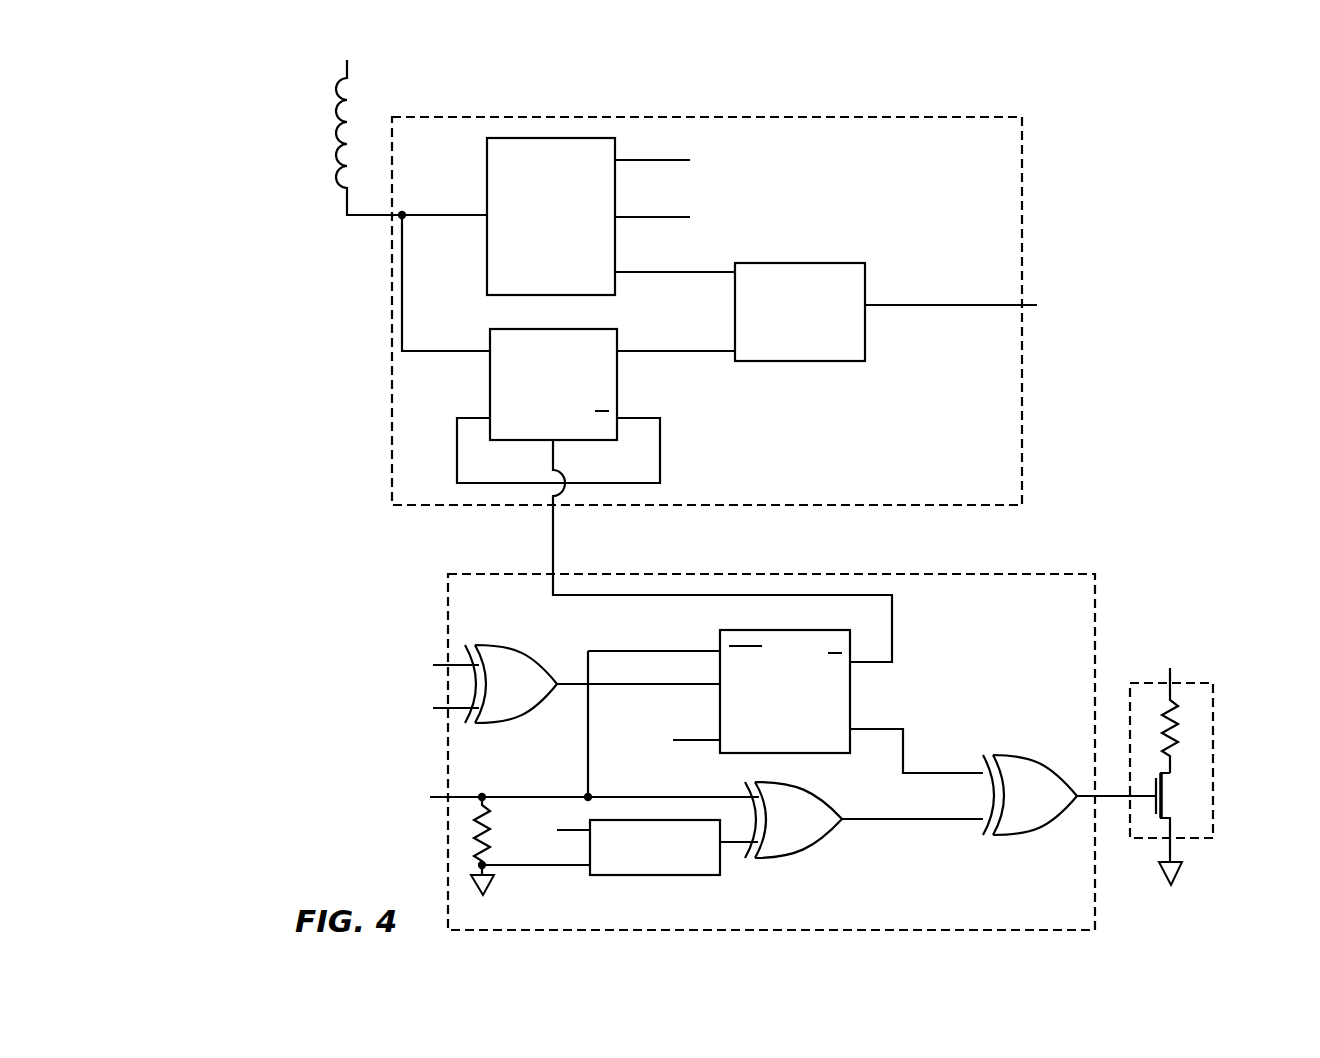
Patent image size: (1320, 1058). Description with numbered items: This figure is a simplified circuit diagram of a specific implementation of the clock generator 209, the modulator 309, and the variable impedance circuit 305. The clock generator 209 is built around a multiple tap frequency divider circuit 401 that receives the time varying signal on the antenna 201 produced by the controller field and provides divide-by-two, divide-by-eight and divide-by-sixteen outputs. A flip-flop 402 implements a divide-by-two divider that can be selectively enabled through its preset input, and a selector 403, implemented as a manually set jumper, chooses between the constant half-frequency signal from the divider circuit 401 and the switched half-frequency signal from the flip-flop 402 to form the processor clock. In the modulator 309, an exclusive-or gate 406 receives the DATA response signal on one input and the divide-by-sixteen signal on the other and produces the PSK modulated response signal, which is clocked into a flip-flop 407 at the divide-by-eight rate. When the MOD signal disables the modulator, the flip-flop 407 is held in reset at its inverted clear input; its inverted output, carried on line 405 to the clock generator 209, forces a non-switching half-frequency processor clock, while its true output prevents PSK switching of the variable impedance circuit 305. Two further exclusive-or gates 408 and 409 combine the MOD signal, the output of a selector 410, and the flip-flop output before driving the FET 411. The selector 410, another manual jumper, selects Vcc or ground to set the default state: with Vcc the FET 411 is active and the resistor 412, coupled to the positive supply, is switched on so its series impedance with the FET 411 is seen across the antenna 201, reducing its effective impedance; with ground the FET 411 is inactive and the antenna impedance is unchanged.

The antenna 201 is at (327, 82).
The clock generator 209 is at (947, 127).
The frequency divider circuit 401 is at (597, 148).
The selector 403 is at (835, 272).
The flip-flop 402 is at (605, 395).
The line 405 is at (563, 518).
The modulator 309 is at (1032, 585).
The exclusive-or gate 406 is at (503, 705).
The flip-flop 407 is at (840, 686).
The exclusive OR gate 408 is at (786, 840).
The exclusive OR gate 409 is at (1021, 818).
The selector 410 is at (665, 875).
The variable impedance circuit 305 is at (1207, 690).
The resistor 412 is at (1180, 728).
The FET 411 is at (1193, 795).